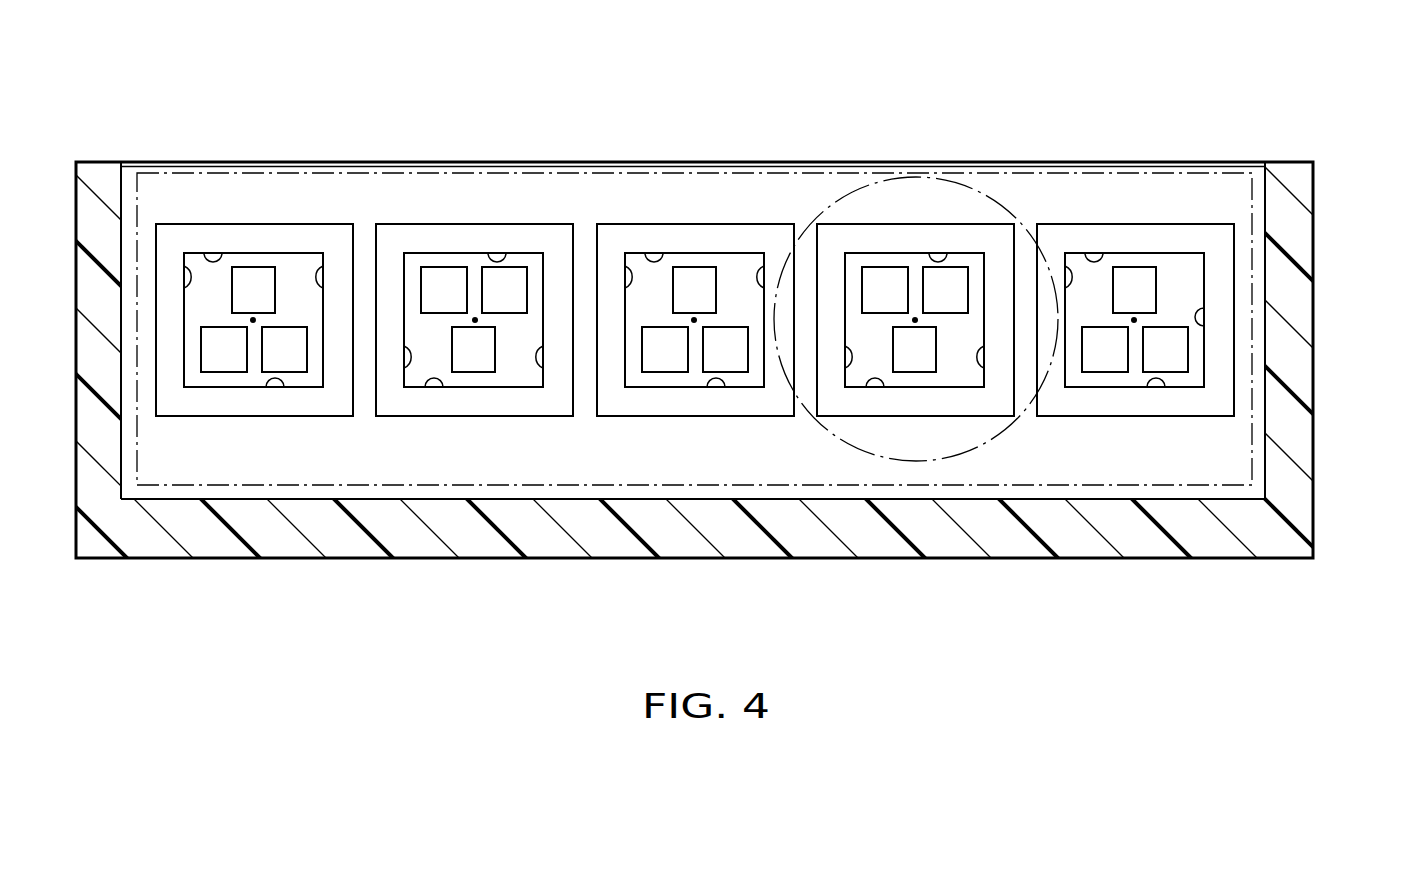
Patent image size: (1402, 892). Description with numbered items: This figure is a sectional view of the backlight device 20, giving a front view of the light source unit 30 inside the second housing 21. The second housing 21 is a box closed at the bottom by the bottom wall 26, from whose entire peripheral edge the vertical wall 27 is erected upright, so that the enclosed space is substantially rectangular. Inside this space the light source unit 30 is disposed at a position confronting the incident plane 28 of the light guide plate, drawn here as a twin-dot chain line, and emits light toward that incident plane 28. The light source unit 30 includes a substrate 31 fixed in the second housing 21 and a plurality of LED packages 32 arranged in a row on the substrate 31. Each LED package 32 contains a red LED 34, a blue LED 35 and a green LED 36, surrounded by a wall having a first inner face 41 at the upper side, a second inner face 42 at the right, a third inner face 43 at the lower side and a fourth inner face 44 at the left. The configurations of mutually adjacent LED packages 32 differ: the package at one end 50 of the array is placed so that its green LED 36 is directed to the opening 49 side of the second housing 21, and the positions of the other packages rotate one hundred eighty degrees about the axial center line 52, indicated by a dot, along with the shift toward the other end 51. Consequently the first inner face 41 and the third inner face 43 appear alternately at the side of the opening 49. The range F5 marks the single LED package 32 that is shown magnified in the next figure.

The backlight device 20 is at (1183, 135).
The second housing 21 is at (1326, 495).
The bottom wall 26 is at (829, 538).
The vertical wall 27 is at (1298, 381).
The incident plane 28 is at (296, 186).
The light source unit 30 is at (737, 176).
The substrate 31 is at (376, 187).
The LED package 32 is at (168, 415).
The red LED 34 is at (292, 358).
The blue LED 35 is at (223, 365).
The green LED 36 is at (253, 275).
The first inner face 41 is at (222, 251).
The second inner face 42 is at (315, 252).
The third inner face 43 is at (281, 386).
The fourth inner face 44 is at (188, 254).
The opening 49 is at (1212, 190).
The one end 50 is at (1262, 275).
The other end 51 is at (128, 311).
The axial center line 52 is at (475, 320).
The range F5 is at (1012, 186).